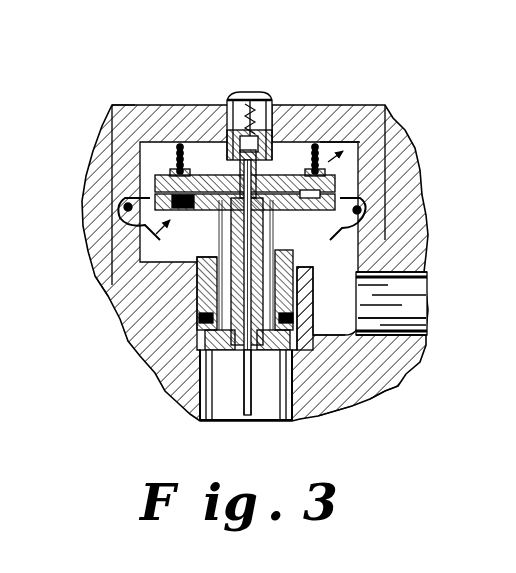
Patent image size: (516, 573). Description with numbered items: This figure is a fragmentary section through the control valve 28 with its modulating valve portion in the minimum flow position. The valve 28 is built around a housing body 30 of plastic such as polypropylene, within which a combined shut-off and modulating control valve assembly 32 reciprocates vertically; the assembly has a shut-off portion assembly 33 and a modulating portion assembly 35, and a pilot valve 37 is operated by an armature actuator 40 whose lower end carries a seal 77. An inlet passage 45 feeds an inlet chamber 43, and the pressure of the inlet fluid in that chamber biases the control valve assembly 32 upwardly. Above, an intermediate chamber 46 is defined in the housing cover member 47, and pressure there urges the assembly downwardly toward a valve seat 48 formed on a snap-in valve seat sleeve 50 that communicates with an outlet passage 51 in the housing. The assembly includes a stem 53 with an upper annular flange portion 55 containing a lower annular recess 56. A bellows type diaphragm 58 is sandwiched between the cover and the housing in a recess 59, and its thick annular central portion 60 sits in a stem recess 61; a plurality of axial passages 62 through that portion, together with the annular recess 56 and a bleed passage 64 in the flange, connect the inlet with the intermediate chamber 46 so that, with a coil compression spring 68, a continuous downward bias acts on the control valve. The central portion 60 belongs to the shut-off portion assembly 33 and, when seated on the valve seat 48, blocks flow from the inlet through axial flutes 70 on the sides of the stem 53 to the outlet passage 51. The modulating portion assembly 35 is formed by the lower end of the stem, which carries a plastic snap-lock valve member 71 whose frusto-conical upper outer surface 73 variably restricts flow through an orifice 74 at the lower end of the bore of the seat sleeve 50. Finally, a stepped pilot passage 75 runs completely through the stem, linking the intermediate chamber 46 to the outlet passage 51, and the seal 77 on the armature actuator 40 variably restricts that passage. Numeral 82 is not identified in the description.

The valve 28 is at (248, 74).
The housing body 30 is at (400, 212).
The combined shut-off and modulating control valve assembly 32 is at (100, 286).
The shut-off portion assembly 33 is at (388, 303).
The modulating portion assembly 35 is at (192, 395).
The pilot valve 37 is at (400, 126).
The armature actuator 40 is at (262, 98).
The inlet chamber 43 is at (385, 382).
The inlet passage 45 is at (424, 338).
The intermediate chamber 46 is at (385, 120).
The housing cover member 47 is at (360, 200).
The valve seat 48 is at (198, 318).
The valve seat sleeve 50 is at (424, 320).
The outlet passage 51 is at (232, 405).
The stem 53 is at (197, 290).
The upper annular flange portion 55 is at (326, 135).
The lower annular recess 56 is at (150, 175).
The bellows type diaphragm 58 is at (422, 264).
The recess 59 is at (127, 237).
The annular central portion 60 is at (330, 298).
The stem recess 61 is at (178, 145).
The axial passages 62 is at (140, 300).
The bleed passage 64 is at (345, 180).
The coil compression spring 68 is at (112, 110).
The axial flutes 70 is at (203, 338).
The snap-lock valve member 71 is at (282, 402).
The frusto-conical upper outer surface 73 is at (330, 388).
The orifice 74 is at (210, 352).
The stepped pilot passage 75 is at (235, 182).
The seal 77 is at (244, 118).
The right return spring 82 is at (312, 140).